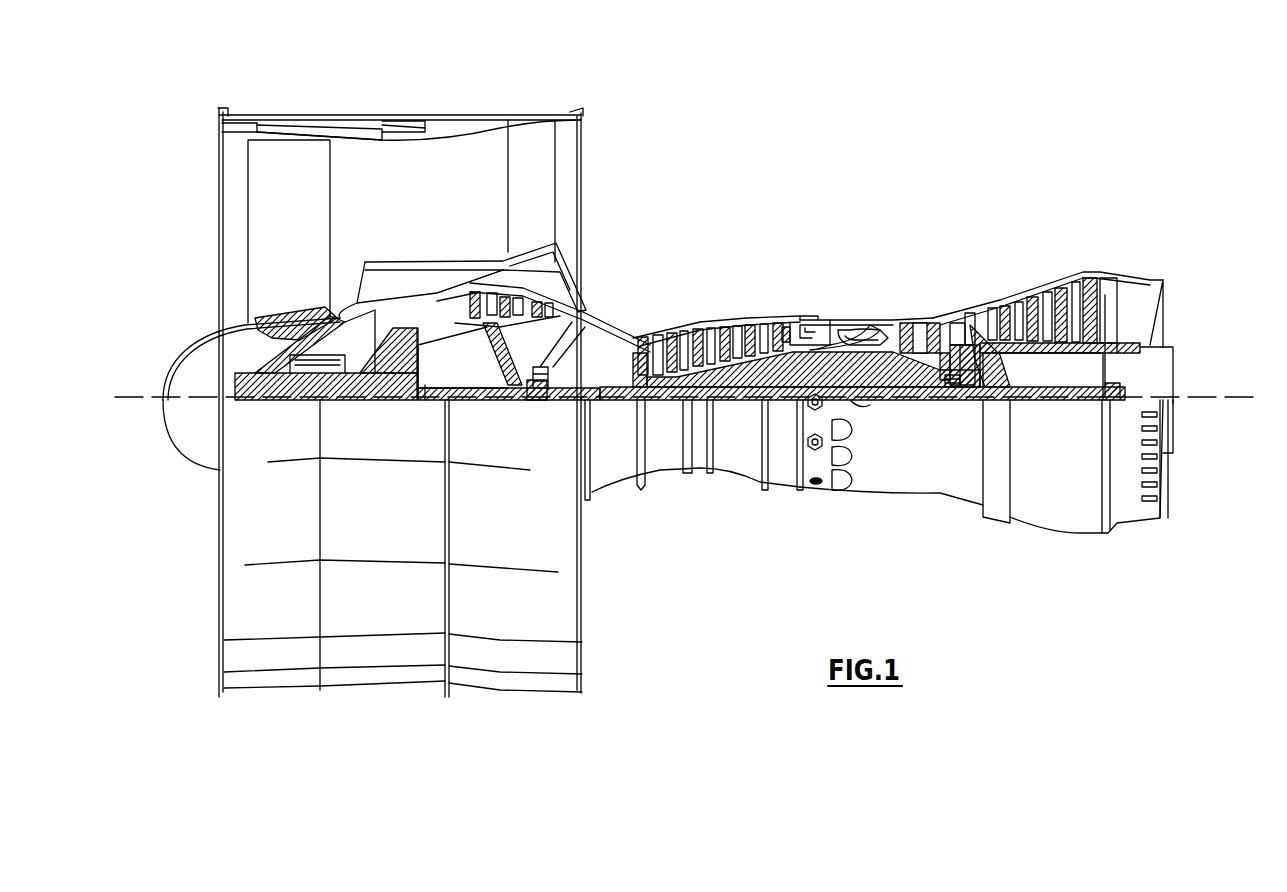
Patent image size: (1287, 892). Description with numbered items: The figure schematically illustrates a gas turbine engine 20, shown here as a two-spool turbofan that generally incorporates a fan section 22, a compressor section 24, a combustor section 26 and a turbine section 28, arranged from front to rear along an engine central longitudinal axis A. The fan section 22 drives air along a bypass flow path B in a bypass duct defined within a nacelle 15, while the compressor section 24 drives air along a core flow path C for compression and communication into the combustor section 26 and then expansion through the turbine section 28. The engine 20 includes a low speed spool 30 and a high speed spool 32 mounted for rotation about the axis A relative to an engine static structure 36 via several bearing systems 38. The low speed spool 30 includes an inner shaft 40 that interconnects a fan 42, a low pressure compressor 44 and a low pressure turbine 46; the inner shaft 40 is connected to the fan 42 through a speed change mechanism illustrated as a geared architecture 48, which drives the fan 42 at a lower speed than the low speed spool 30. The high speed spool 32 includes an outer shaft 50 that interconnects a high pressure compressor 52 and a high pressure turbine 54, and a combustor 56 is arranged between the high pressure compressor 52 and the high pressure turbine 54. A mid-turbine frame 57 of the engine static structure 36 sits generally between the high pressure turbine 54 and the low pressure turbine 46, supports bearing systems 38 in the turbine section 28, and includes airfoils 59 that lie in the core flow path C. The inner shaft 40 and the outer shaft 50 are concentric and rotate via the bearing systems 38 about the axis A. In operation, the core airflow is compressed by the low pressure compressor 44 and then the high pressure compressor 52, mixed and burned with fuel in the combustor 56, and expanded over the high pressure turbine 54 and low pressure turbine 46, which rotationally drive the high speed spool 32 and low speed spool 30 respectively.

The gas turbine engine 20 is at (856, 168).
The fan section 22 is at (331, 108).
The nacelle 15 is at (398, 125).
The fan 42 is at (304, 246).
The low pressure compressor 44 is at (505, 330).
The compressor section 24 is at (630, 310).
The high pressure compressor 52 is at (713, 347).
The high speed spool 32 is at (788, 345).
The combustor section 26 is at (853, 300).
The combustor 56 is at (856, 342).
The high pressure turbine 54 is at (926, 335).
The mid-turbine frame 57 is at (963, 316).
The turbine section 28 is at (1002, 259).
The low pressure turbine 46 is at (1050, 290).
The airfoils 59 is at (985, 362).
The geared architecture 48 is at (410, 378).
The bearing systems 38 is at (542, 389).
The inner shaft 40 is at (600, 400).
The low speed spool 30 is at (740, 400).
The engine static structure 36 is at (778, 487).
The outer shaft 50 is at (860, 399).
The engine central longitudinal axis A is at (1248, 397).
The bypass flow path B is at (368, 190).
The core flow path C is at (412, 301).